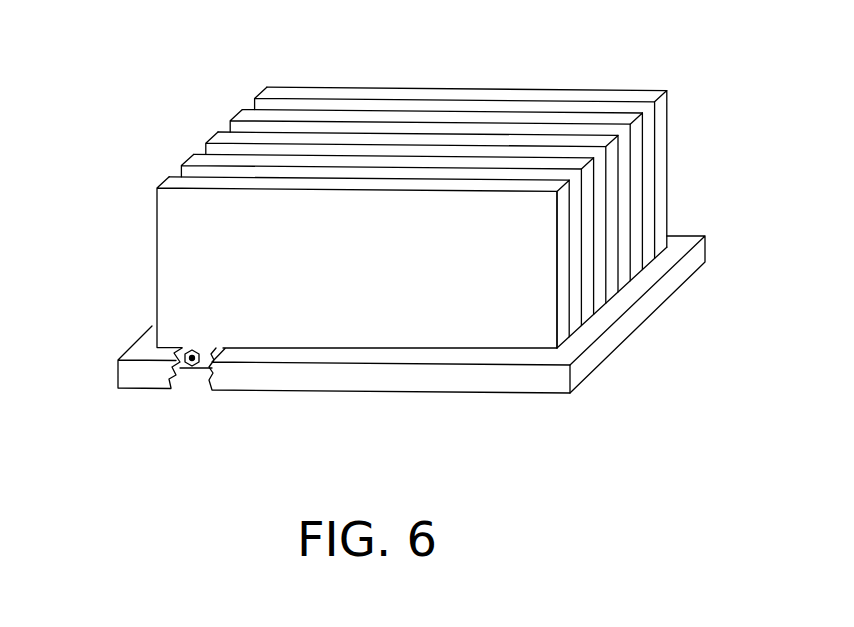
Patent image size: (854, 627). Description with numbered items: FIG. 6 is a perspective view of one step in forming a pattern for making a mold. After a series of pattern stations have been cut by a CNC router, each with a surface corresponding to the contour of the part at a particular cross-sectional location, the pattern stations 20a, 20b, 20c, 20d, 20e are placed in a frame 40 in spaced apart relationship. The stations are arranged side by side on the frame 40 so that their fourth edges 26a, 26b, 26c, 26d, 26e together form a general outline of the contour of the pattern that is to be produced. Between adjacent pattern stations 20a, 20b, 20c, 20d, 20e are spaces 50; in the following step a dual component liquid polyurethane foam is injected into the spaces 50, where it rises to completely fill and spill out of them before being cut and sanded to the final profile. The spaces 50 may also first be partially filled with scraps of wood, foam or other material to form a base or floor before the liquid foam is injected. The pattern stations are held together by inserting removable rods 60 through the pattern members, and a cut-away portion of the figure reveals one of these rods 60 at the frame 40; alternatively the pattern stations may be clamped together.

The pattern station 20a is at (178, 257).
The pattern station 20b is at (181, 174).
The pattern station 20c is at (206, 149).
The pattern station 20d is at (230, 128).
The pattern station 20e is at (255, 106).
The fourth edge 26a is at (169, 177).
The fourth edge 26b is at (194, 155).
The fourth edge 26c is at (218, 132).
The fourth edge 26d is at (268, 104).
The fourth edge 26e is at (441, 94).
The frame 40 is at (445, 383).
The spaces 50 is at (580, 212).
The removable rods 60 is at (192, 366).